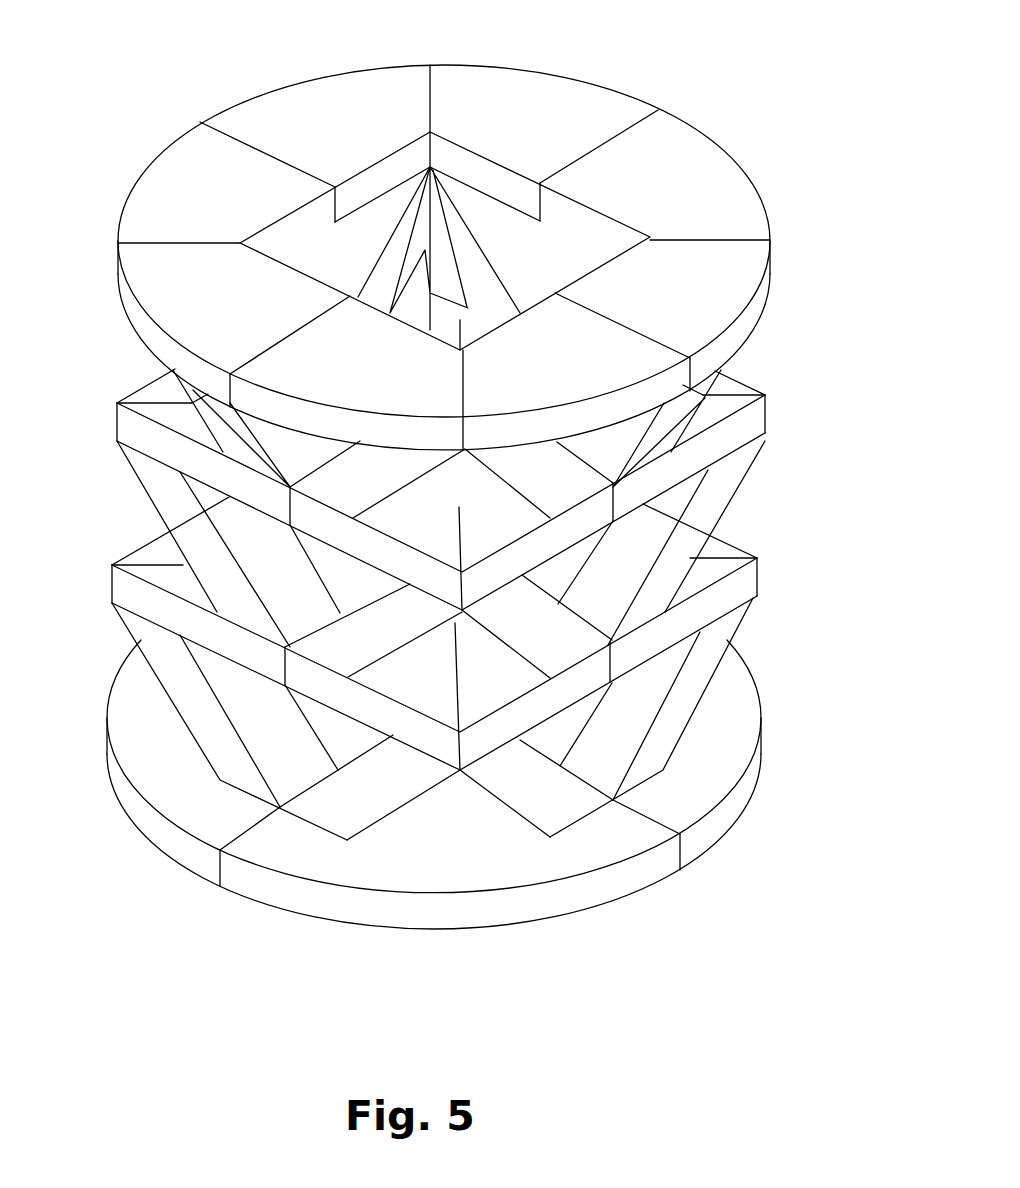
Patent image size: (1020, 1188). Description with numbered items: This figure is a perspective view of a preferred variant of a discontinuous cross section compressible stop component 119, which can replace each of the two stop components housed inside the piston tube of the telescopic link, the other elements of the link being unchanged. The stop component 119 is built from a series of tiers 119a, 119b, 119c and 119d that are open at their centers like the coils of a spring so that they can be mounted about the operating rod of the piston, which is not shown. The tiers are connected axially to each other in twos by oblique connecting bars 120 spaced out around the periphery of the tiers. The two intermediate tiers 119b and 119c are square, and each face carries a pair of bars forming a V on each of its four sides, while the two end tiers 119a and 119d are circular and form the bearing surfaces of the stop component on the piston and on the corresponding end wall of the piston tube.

The compressible stop component 119 is at (463, 543).
The end tier 119a is at (572, 103).
The intermediate tier 119b is at (744, 422).
The intermediate tier 119c is at (742, 580).
The end tier 119d is at (723, 734).
The oblique connecting bars 120 is at (517, 259).